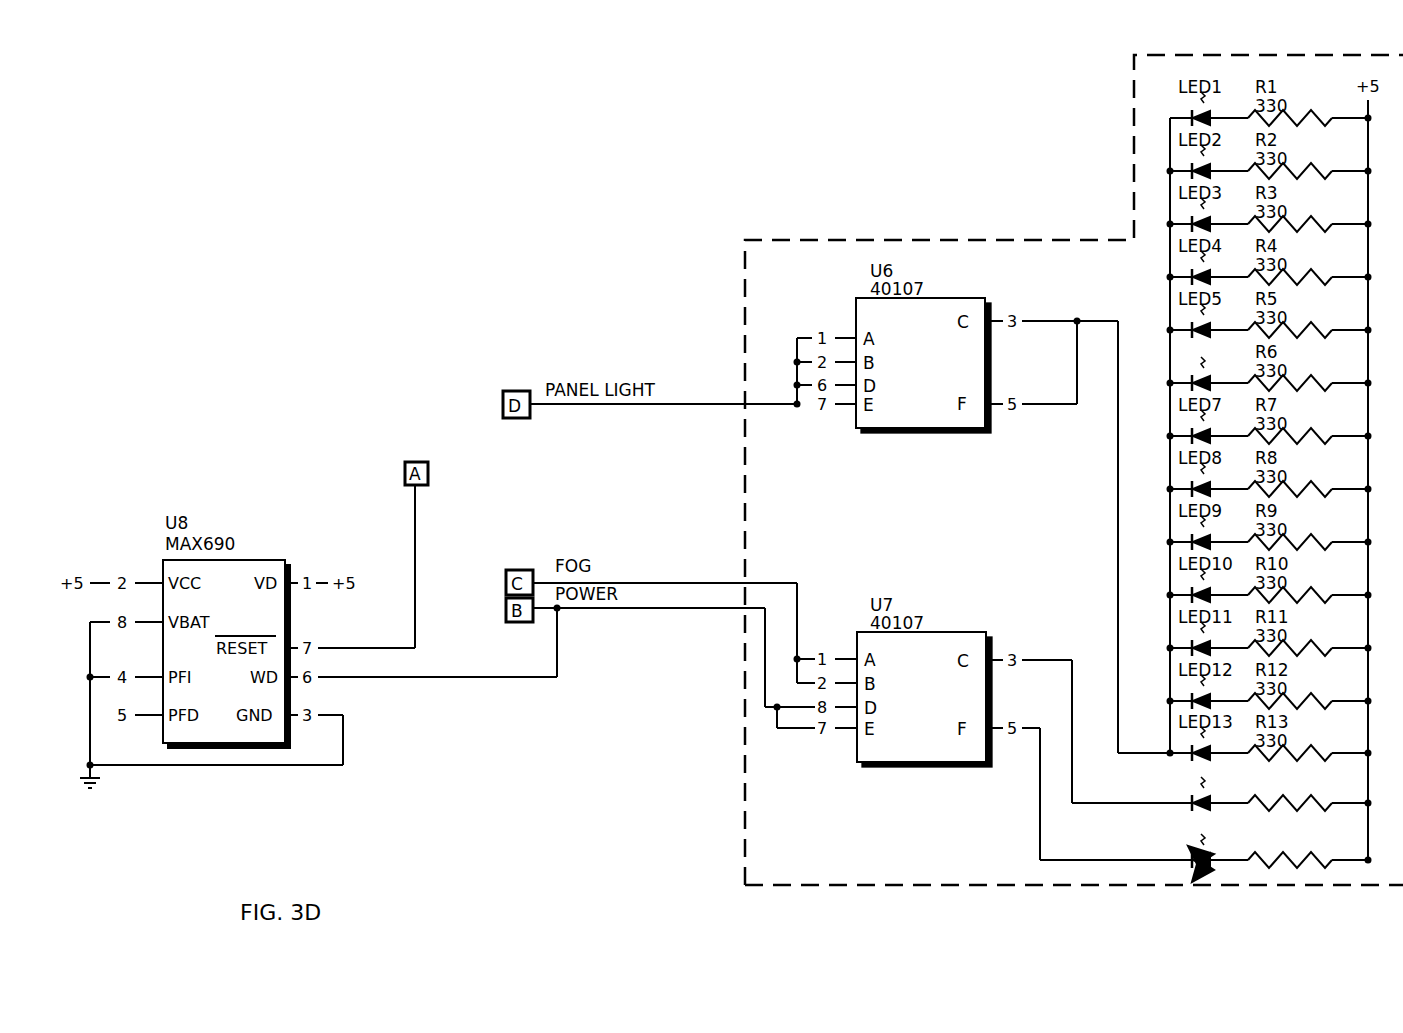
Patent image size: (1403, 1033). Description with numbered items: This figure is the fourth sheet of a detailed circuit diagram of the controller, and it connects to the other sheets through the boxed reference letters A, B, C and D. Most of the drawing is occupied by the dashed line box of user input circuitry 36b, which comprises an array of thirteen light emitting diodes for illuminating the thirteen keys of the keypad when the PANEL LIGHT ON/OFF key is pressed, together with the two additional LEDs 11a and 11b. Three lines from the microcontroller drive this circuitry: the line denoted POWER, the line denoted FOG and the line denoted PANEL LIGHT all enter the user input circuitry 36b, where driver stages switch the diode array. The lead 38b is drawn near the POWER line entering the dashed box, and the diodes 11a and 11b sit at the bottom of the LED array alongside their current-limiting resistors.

The LED 11a is at (1195, 840).
The LED 11b is at (1195, 790).
The user input circuitry 36b is at (1090, 884).
The power signal line 38b is at (689, 621).